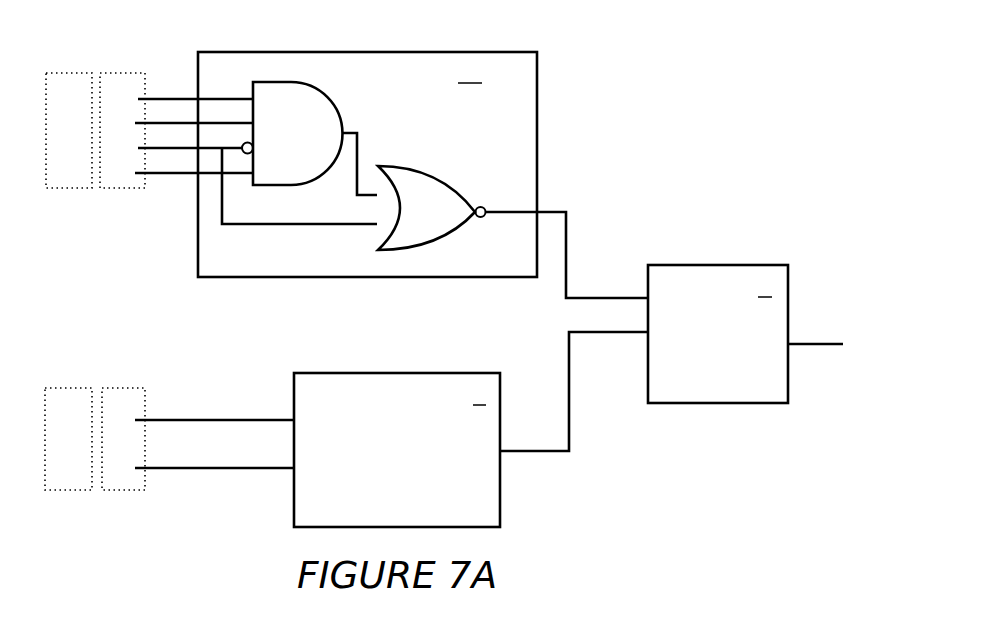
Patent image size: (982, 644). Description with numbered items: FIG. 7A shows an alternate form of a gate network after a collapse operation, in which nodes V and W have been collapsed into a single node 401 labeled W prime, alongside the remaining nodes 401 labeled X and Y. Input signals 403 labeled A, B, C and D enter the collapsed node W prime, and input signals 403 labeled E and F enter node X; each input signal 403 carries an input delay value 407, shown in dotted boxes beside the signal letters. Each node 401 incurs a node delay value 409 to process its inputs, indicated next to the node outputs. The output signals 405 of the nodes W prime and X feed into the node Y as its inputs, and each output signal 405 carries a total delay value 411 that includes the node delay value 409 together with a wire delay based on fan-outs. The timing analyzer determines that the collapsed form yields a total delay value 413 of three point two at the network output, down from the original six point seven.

The node 401 is at (367, 52).
The input signal 403 is at (122, 73).
The output signal 405 is at (587, 213).
The input delay value 407 is at (70, 73).
The node delay value 409 is at (517, 185).
The total delay value 411 is at (622, 272).
The total delay value for the gate network 413 is at (815, 317).